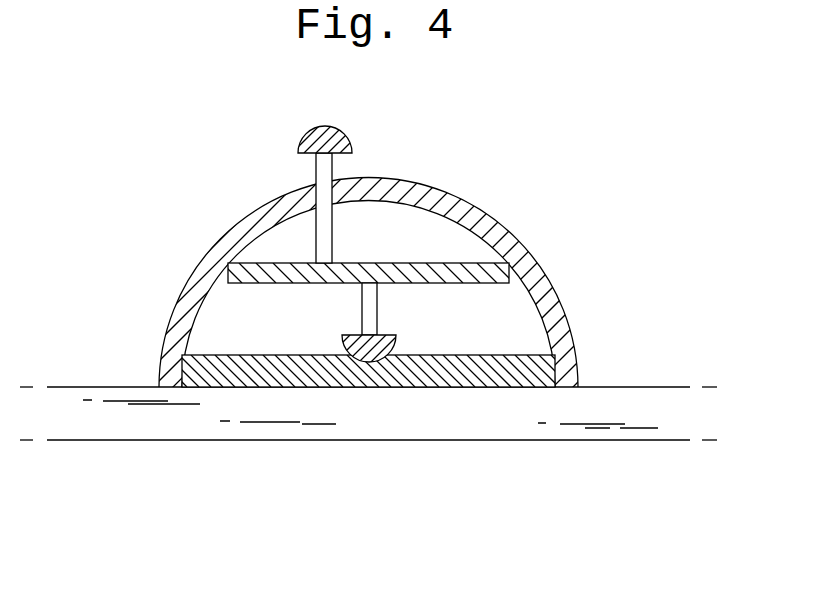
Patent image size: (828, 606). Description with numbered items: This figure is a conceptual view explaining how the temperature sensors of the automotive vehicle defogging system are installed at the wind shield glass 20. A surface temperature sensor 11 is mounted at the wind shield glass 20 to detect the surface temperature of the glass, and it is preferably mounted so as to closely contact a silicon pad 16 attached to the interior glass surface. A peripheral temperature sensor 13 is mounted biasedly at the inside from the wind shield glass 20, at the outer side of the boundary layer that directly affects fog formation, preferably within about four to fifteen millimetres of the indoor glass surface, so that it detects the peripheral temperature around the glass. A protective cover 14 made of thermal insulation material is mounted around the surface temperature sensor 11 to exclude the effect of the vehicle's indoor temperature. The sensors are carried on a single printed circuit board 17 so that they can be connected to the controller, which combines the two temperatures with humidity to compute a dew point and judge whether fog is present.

The surface temperature sensor 11 is at (376, 350).
The peripheral temperature sensor 13 is at (344, 130).
The protective cover 14 is at (553, 302).
The silicon pad 16 is at (487, 373).
The printed circuit board 17 is at (448, 270).
The wind shield glass 20 is at (190, 422).